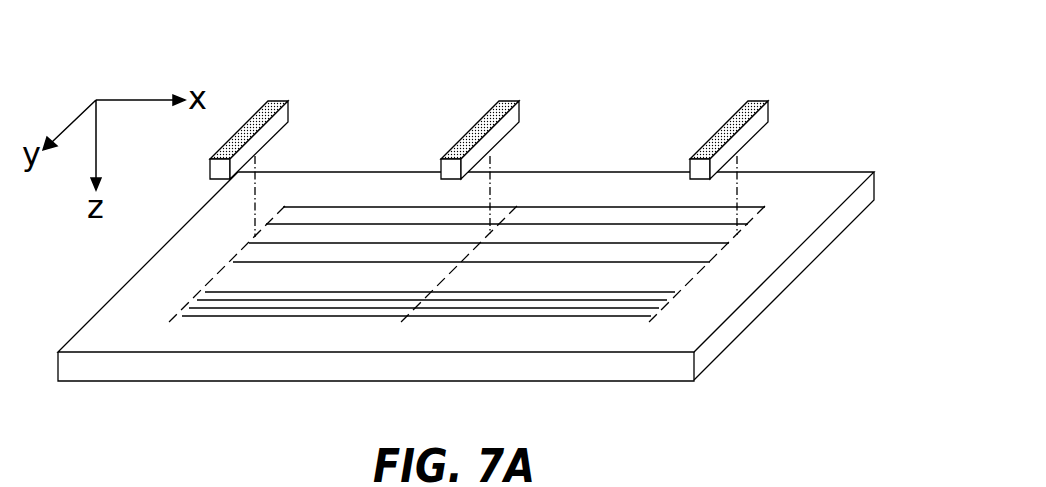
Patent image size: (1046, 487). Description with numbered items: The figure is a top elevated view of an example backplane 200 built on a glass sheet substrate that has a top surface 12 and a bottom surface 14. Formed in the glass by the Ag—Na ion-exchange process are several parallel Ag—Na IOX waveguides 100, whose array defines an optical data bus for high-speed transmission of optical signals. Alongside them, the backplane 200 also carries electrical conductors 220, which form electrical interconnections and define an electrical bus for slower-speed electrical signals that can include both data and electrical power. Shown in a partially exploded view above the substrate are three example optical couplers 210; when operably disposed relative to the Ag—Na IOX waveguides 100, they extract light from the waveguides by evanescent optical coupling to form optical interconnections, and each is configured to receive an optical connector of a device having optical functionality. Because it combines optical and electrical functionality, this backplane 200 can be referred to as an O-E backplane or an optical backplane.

The backplane 200 is at (577, 66).
The top surface 12 is at (857, 178).
The bottom surface 14 is at (718, 355).
The Ag—Na IOX waveguides 100 is at (390, 262).
The electrical conductors 220 is at (258, 292).
The optical couplers 210 is at (256, 125).